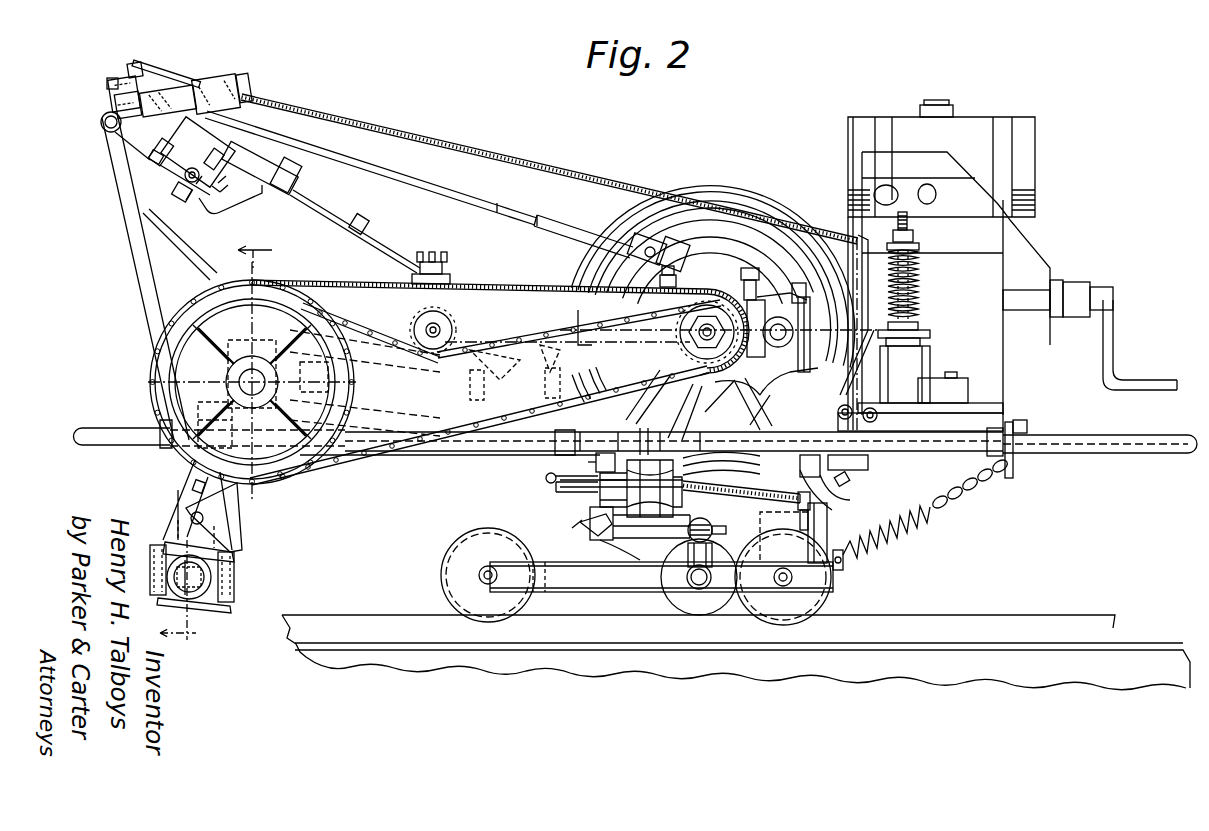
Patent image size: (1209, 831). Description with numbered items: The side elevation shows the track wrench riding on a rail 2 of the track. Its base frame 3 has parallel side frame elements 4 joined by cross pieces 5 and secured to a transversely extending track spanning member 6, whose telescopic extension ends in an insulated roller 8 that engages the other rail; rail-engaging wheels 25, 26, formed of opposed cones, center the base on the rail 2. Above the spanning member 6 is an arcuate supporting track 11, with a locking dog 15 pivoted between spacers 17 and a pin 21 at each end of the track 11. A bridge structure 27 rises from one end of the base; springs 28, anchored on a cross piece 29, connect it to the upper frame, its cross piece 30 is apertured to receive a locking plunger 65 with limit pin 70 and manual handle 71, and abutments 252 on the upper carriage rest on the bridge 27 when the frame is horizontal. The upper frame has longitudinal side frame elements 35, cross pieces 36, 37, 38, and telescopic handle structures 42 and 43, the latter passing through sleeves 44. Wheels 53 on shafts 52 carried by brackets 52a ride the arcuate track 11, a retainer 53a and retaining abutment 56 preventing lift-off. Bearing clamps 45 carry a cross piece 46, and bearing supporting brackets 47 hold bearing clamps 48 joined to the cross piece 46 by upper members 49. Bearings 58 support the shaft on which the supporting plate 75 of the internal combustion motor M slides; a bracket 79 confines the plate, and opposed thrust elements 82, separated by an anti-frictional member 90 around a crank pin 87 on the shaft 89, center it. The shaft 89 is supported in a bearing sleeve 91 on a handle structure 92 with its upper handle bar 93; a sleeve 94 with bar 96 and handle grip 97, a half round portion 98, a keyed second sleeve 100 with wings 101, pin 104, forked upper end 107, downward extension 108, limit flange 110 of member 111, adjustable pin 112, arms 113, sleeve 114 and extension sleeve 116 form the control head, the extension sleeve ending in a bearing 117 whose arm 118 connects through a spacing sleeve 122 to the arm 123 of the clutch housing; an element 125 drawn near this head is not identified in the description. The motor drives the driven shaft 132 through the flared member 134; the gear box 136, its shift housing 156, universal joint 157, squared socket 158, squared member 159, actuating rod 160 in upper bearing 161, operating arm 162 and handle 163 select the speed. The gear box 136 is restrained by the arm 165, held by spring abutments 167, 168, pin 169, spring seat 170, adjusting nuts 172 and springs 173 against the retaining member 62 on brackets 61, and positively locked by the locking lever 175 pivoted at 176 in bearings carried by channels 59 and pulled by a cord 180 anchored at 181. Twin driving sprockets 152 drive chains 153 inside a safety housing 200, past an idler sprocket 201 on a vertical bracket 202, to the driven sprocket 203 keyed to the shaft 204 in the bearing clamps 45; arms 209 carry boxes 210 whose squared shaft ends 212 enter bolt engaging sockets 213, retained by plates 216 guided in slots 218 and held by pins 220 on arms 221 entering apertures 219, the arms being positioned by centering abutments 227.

The ground/floor 2 is at (986, 638).
The truck 3 is at (604, 602).
The truck frame 4 is at (640, 596).
The frame side bar 5 is at (550, 578).
The axle 6 is at (698, 590).
The drive roller 8 is at (706, 615).
The section line 11 is at (451, 438).
The bearing bracket 15 is at (688, 562).
The section line 17 is at (719, 335).
The motor unit 21 is at (714, 526).
The front wheel 25 is at (448, 548).
The rear wheel 26 is at (786, 612).
The bracket 27 is at (828, 522).
The spring 28 is at (898, 542).
The anchor 29 is at (846, 565).
The support 30 is at (806, 520).
The frame bar 35 is at (486, 456).
The frame joint 36 is at (164, 449).
The sprocket wheel 37 is at (284, 386).
The bearing block 38 is at (588, 460).
The rod 42 is at (96, 428).
The rod 43 is at (1136, 436).
The collar 44 is at (990, 448).
The hub bracket 45 is at (222, 389).
The chain ring 46 is at (330, 347).
The frame bar 47 is at (674, 439).
The shaft 48 is at (756, 250).
The bracket 49 is at (484, 380).
The bearing 52 is at (588, 512).
The guard 52a is at (721, 463).
The drum 53 is at (676, 496).
The link 53a is at (645, 548).
The lever 56 is at (578, 524).
The base plate 58 is at (870, 424).
The block 59 is at (975, 400).
The housing 61 is at (930, 358).
The flange 62 is at (930, 333).
The shaft 65 is at (772, 490).
The rod 70 is at (570, 492).
The pin 71 is at (546, 478).
The plate 75 is at (1010, 430).
The nut 79 is at (1028, 424).
The block 82 is at (858, 466).
The pin 87 is at (850, 480).
The frame 89 is at (736, 418).
The link 90 is at (846, 496).
The swivel 91 is at (109, 95).
The frame tube 92 is at (128, 212).
The ring 93 is at (100, 122).
The link 94 is at (118, 138).
The collar 96 is at (116, 106).
The cap 97 is at (251, 90).
The block 98 is at (157, 158).
The housing 100 is at (192, 142).
The arm 101 is at (162, 172).
The pin 104 is at (186, 202).
The bolt 107 is at (214, 154).
The block 108 is at (176, 196).
The pivot 110 is at (184, 180).
The link 111 is at (222, 212).
The pin 112 is at (217, 190).
The pin 113 is at (198, 188).
The link bar 114 is at (262, 168).
The rod 116 is at (322, 206).
The center line 117 is at (574, 338).
The bracket 118 is at (570, 370).
The block 122 is at (580, 442).
The block 123 is at (662, 441).
The pin 125 is at (150, 158).
The bolt 132 is at (682, 298).
The flywheel 134 is at (744, 191).
The hub 136 is at (708, 272).
The sprocket nut 152 is at (690, 322).
The chain 153 is at (362, 326).
The rim 156 is at (696, 236).
The knuckle 157 is at (648, 240).
The rod section 158 is at (560, 218).
The rod section 159 is at (506, 204).
The rod 160 is at (448, 188).
The bracket 161 is at (112, 78).
The rod 162 is at (165, 78).
The cylinder 163 is at (234, 78).
The link 165 is at (870, 320).
The seat 167 is at (918, 322).
The plate 168 is at (920, 342).
The bolt 169 is at (908, 218).
The washer 170 is at (920, 248).
The nut 172 is at (914, 236).
The spring 173 is at (920, 270).
The bracket 175 is at (872, 244).
The bolt 176 is at (877, 414).
The rod 180 is at (404, 134).
The pin 181 is at (133, 62).
The chain case 200 is at (498, 284).
The idler sprocket 201 is at (456, 328).
The hidden bar 202 is at (420, 385).
The hidden block 203 is at (340, 404).
The hidden bracket 204 is at (240, 374).
The bracket 209 is at (236, 515).
The base 210 is at (162, 605).
The center line 212 is at (188, 600).
The bearing 213 is at (202, 585).
The plate 216 is at (180, 540).
The side plate 218 is at (236, 575).
The bolt 219 is at (190, 518).
The hidden line 220 is at (216, 534).
The arm 221 is at (212, 488).
The bolt 227 is at (192, 487).
The link 252 is at (836, 506).
The motor M is at (982, 267).